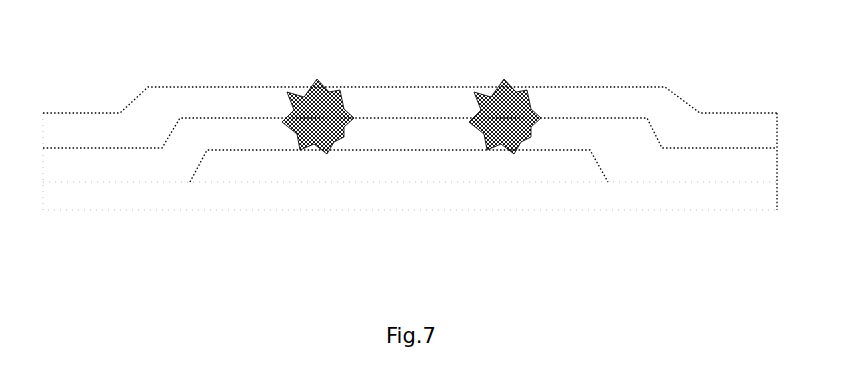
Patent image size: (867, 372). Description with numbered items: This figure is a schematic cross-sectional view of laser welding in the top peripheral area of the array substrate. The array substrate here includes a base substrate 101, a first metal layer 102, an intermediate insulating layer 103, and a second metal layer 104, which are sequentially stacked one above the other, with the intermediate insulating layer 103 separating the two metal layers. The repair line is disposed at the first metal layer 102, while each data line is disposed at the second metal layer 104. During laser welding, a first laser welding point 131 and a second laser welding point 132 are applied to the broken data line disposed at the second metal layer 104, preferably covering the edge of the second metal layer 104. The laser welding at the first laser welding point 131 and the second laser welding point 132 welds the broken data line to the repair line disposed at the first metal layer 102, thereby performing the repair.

The base substrate 101 is at (582, 213).
The first metal layer 102 is at (437, 183).
The intermediate insulating layer 103 is at (727, 152).
The second metal layer 104 is at (630, 85).
The first laser welding point 131 is at (340, 87).
The second laser welding point 132 is at (476, 90).